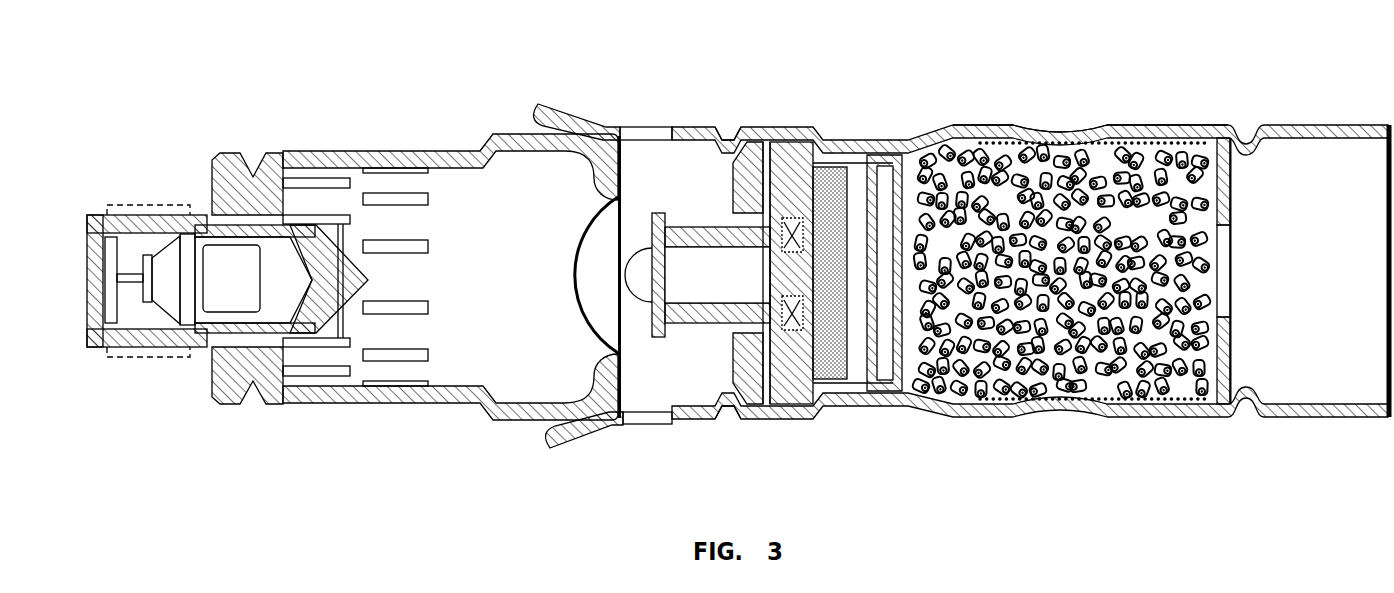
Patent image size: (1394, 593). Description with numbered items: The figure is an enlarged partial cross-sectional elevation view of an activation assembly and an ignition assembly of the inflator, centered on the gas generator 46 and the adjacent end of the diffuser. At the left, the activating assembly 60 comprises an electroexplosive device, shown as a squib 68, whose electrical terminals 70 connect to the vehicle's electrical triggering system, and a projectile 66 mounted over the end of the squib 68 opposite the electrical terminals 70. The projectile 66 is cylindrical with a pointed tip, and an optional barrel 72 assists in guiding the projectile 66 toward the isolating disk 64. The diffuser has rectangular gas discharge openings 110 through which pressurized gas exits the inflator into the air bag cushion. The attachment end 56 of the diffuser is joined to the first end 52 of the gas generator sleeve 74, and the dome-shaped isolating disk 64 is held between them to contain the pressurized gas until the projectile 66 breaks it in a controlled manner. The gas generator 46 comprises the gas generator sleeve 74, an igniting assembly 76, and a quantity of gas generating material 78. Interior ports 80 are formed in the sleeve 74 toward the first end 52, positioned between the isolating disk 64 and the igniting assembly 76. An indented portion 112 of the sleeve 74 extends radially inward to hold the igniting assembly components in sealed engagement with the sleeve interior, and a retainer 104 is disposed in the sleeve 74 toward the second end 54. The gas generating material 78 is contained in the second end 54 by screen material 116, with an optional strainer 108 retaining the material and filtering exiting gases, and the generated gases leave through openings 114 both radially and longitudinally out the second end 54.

The gas generator 46 is at (721, 255).
The first end 52 is at (454, 230).
The second end 54 is at (1032, 284).
The attachment end 56 is at (587, 385).
The activating assembly 60 is at (165, 222).
The isolating disk 64 is at (577, 268).
The projectile 66 is at (338, 224).
The squib 68 is at (186, 295).
The electrical terminals 70 is at (112, 277).
The barrel 72 is at (339, 340).
The gas generator sleeve 74 is at (1176, 125).
The igniting assembly 76 is at (783, 380).
The gas generating material 78 is at (965, 415).
The interior ports 80 is at (648, 133).
The retainer 104 is at (877, 154).
The strainer 108 is at (1232, 189).
The gas discharge openings 110 is at (398, 196).
The indented portion 112 is at (737, 410).
The openings 114 is at (1110, 269).
The screen material 116 is at (1182, 418).